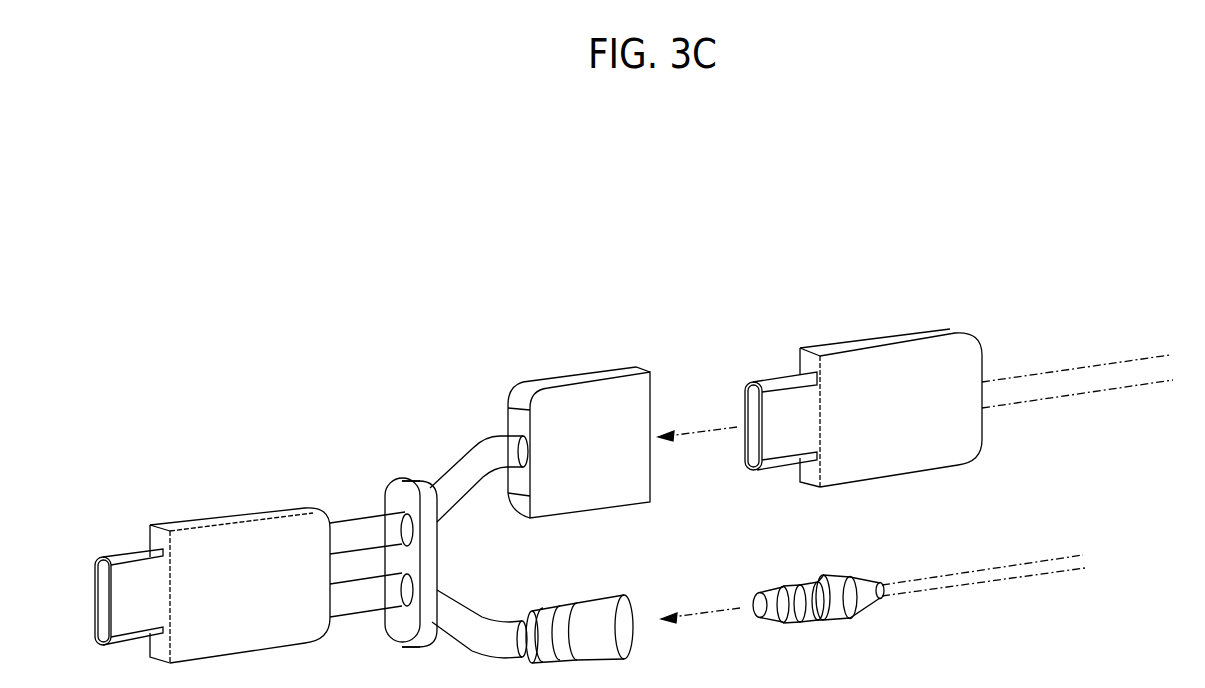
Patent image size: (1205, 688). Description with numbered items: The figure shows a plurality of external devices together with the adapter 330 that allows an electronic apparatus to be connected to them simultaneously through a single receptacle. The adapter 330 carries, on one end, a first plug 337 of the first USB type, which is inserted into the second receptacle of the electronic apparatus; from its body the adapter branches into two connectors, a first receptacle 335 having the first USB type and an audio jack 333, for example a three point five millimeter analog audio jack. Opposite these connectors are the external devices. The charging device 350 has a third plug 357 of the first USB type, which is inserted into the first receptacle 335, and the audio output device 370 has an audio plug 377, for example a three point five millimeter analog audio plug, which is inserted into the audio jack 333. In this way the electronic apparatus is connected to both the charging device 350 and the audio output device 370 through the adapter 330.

The adapter 330 is at (228, 506).
The first plug 337 is at (132, 548).
The first receptacle 335 is at (570, 371).
The audio jack 333 is at (588, 595).
The charging device 350 is at (880, 334).
The third plug 357 is at (777, 372).
The audio output device 370 is at (832, 572).
The audio plug 377 is at (757, 591).